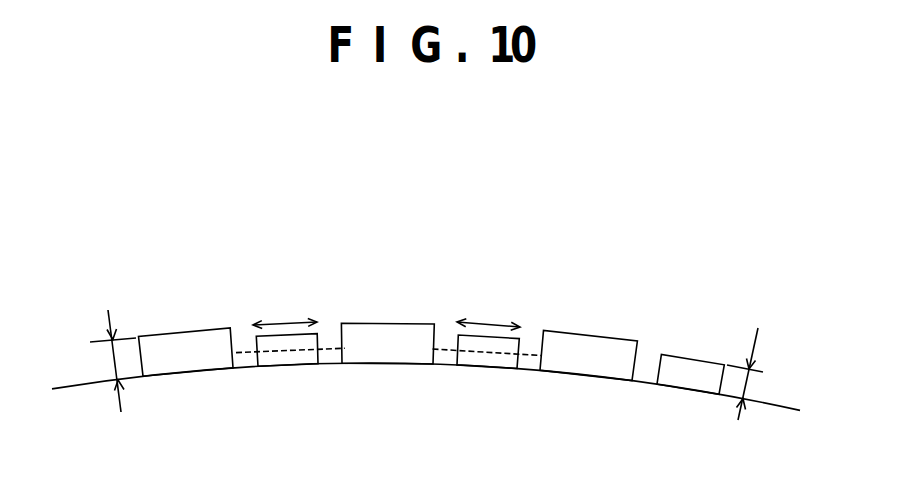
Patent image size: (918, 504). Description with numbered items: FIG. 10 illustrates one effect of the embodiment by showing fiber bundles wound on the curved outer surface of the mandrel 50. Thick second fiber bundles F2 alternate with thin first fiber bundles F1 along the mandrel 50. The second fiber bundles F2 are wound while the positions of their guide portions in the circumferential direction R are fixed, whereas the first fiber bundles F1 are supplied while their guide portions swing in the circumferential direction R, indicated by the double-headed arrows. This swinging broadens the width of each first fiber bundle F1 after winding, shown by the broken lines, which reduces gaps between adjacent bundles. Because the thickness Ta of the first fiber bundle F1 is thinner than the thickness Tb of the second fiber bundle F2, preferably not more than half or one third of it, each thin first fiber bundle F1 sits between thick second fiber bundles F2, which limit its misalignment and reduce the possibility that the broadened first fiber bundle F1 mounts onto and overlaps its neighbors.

The mandrel 50 is at (443, 478).
The first fiber bundle F1 is at (317, 335).
The second fiber bundle F2 is at (185, 327).
The circumferential direction R is at (287, 320).
The thickness of the first fiber bundle Ta is at (754, 374).
The thickness of the second fiber bundle Tb is at (106, 361).